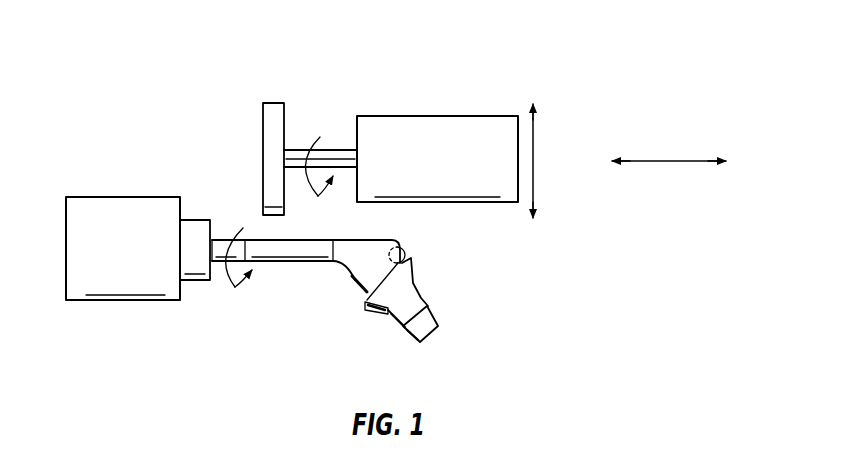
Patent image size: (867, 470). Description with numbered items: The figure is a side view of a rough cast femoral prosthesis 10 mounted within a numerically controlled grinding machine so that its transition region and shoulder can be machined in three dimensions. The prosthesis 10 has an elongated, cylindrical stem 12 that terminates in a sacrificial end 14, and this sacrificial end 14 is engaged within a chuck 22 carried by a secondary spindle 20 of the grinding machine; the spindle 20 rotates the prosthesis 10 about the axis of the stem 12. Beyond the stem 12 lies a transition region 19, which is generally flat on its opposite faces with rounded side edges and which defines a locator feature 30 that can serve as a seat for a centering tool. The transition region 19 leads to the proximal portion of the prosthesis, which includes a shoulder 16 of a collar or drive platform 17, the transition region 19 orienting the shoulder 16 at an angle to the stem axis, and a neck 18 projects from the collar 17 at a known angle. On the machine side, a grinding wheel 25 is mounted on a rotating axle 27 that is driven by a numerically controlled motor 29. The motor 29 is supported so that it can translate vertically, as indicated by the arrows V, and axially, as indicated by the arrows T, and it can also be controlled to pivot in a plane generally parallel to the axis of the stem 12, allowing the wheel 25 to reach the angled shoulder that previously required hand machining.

The femoral prosthesis 10 is at (438, 341).
The stem 12 is at (292, 248).
The sacrificial end 14 is at (218, 247).
The shoulder 16 is at (365, 303).
The collar or drive platform 17 is at (411, 277).
The neck 18 is at (410, 308).
The transition region 19 is at (362, 244).
The secondary spindle 20 is at (122, 288).
The chuck 22 is at (195, 268).
The grinding wheel 25 is at (274, 106).
The rotating axle 27 is at (330, 158).
The numerically controlled motor 29 is at (440, 121).
The locator feature 30 is at (406, 252).
The arrows V is at (533, 159).
The arrows T is at (667, 161).